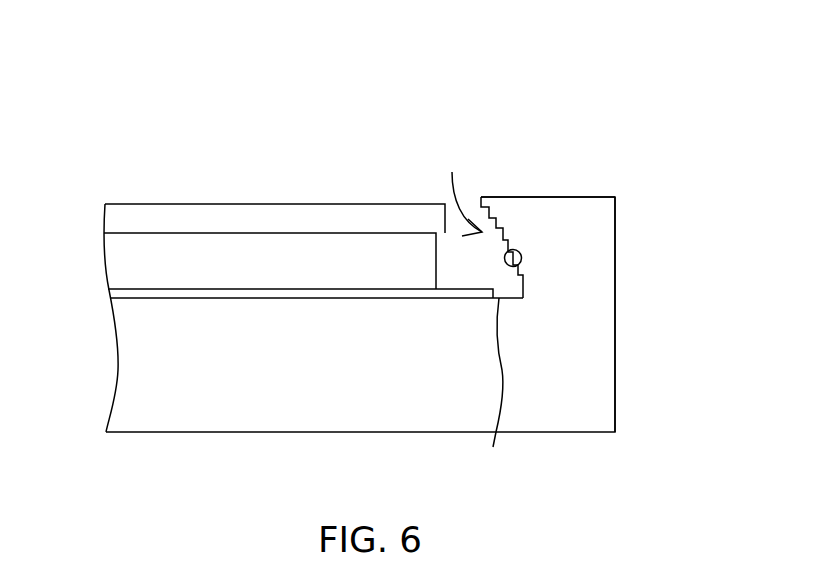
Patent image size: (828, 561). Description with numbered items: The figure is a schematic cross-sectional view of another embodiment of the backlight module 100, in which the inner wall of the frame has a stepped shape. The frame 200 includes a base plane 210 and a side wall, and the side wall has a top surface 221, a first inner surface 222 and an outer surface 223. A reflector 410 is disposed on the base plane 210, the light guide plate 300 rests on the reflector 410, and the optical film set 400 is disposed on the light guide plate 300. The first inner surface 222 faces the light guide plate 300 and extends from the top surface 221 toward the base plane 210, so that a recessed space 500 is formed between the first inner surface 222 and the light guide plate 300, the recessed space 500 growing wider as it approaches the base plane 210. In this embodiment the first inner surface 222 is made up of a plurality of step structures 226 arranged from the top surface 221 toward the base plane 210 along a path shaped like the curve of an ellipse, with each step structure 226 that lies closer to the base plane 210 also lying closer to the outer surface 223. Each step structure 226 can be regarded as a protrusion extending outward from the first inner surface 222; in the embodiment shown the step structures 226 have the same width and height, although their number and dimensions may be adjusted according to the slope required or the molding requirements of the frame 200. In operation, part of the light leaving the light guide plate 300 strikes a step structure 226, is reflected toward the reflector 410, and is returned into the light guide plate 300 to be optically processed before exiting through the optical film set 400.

The backlight module 100 is at (120, 71).
The frame 200 is at (393, 302).
The base plane 210 is at (492, 388).
The top surface 221 is at (547, 197).
The first inner surface 222 is at (490, 209).
The outer surface 223 is at (615, 245).
The step structure 226 is at (520, 264).
The light guide plate 300 is at (113, 257).
The optical film set 400 is at (112, 220).
The reflector 410 is at (118, 295).
The recessed space 500 is at (456, 191).